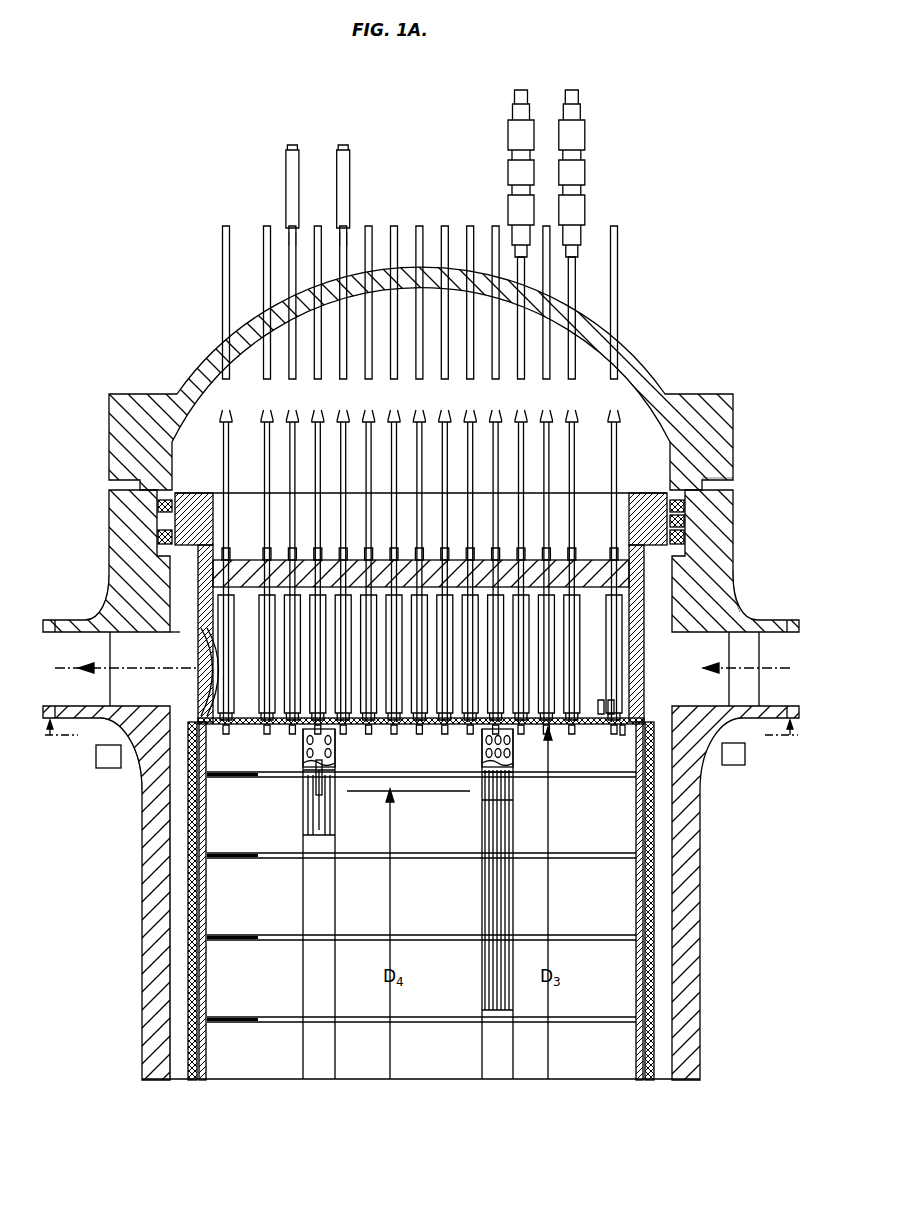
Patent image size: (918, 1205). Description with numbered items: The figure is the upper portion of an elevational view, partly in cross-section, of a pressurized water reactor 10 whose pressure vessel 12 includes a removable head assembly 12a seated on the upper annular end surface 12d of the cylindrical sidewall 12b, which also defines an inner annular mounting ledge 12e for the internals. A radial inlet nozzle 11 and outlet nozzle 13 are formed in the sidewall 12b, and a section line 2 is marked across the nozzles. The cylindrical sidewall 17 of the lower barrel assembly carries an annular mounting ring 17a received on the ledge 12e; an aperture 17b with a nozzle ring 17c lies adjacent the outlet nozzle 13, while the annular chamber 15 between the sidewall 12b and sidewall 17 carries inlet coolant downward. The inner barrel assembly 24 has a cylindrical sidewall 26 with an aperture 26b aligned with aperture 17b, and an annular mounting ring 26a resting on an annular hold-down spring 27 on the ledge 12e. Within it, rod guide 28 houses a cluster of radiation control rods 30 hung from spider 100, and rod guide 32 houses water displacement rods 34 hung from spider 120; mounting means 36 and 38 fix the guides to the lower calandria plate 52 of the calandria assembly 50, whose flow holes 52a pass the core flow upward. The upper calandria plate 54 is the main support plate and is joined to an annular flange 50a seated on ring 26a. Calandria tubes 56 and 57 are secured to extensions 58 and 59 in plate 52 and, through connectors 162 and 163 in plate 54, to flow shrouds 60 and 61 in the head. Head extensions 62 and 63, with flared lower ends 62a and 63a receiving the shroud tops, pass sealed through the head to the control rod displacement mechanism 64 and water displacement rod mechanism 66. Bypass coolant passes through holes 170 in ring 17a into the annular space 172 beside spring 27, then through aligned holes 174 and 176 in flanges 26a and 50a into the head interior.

The pressurized water reactor 10 is at (703, 181).
The pressure vessel 12 is at (421, 673).
The head assembly 12a is at (660, 386).
The cylindrical sidewall 12b is at (701, 957).
The upper annular end surface 12d is at (733, 505).
The annular mounting ledge 12e is at (686, 540).
The annular space 172 is at (688, 519).
The holes 174 is at (700, 470).
The holes 176 is at (652, 494).
The holes 170 is at (702, 592).
The cylindrical sidewall 17 is at (421, 690).
The annular mounting ring 17a is at (112, 580).
The aperture 17b is at (136, 780).
The nozzle ring 17c is at (176, 636).
The annular chamber 15 is at (676, 915).
The outlet nozzle 13 is at (92, 756).
The inlet nozzle 11 is at (750, 751).
The section line 2 is at (420, 732).
The inner barrel assembly 24 is at (188, 916).
The cylindrical sidewall 26 is at (208, 1044).
The annular mounting ring 26a is at (160, 505).
The aperture 26b is at (204, 684).
The annular hold-down spring 27 is at (160, 530).
The rod guide 28 is at (386, 904).
The radiation control rods 30 is at (330, 828).
The rod guide 32 is at (476, 904).
The water displacement rods 34 is at (488, 826).
The mounting means 36 is at (336, 732).
The mounting means 38 is at (482, 735).
The calandria assembly 50 is at (371, 590).
The annular flange 50a is at (206, 493).
The lower calandria plate 52 is at (624, 736).
The flow holes 52a is at (609, 716).
The upper calandria plate 54 is at (256, 560).
The calandria tube 56 is at (528, 665).
The calandria tube 57 is at (300, 697).
The calandria extension 58 is at (388, 728).
The calandria extension 59 is at (290, 733).
The flow shroud 60 is at (520, 473).
The flow shroud 61 is at (340, 452).
The head extension 62 is at (520, 350).
The flared lower end 62a is at (520, 393).
The head extension 63 is at (343, 245).
The flared lower end 63a is at (270, 410).
The control rod cluster displacement mechanism 64 is at (572, 92).
The water displacement rod cluster displacement mechanism 66 is at (343, 150).
The spider 100 is at (322, 790).
The spider 120 is at (488, 790).
The connector 162 is at (470, 556).
The connector 163 is at (480, 548).